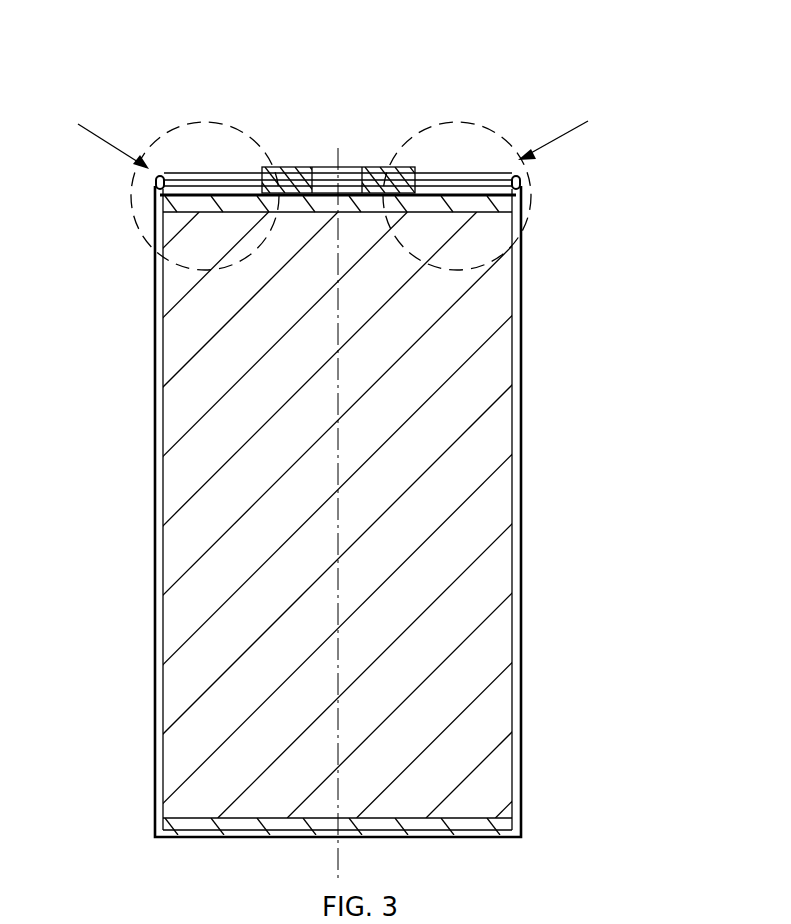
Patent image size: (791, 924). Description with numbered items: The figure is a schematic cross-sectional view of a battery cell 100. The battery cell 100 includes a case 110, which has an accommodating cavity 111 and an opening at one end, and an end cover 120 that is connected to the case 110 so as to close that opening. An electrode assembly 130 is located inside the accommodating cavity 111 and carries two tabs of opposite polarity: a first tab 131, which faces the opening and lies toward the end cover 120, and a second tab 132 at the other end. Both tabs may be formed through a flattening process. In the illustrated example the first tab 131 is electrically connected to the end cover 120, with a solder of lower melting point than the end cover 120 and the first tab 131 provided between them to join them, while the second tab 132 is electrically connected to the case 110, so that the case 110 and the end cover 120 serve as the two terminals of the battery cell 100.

The battery cell 100 is at (290, 122).
The case 110 is at (522, 337).
The accommodating cavity 111 is at (514, 445).
The end cover 120 is at (478, 172).
The electrode assembly 130 is at (473, 576).
The first tab 131 is at (516, 197).
The second tab 132 is at (490, 822).